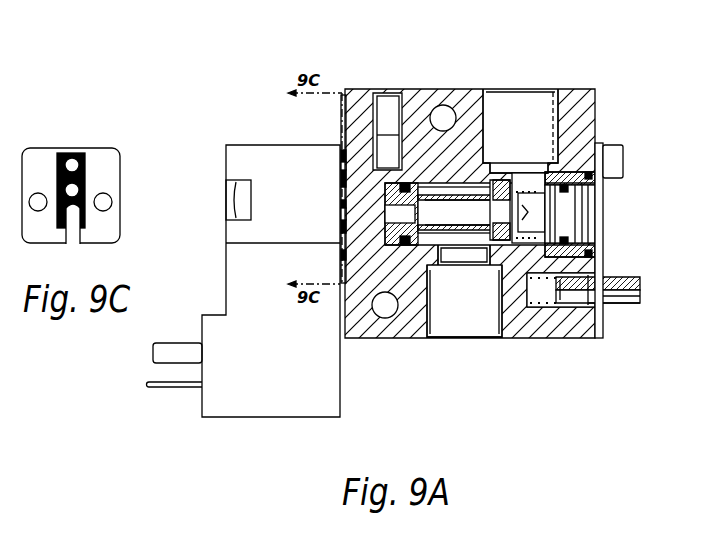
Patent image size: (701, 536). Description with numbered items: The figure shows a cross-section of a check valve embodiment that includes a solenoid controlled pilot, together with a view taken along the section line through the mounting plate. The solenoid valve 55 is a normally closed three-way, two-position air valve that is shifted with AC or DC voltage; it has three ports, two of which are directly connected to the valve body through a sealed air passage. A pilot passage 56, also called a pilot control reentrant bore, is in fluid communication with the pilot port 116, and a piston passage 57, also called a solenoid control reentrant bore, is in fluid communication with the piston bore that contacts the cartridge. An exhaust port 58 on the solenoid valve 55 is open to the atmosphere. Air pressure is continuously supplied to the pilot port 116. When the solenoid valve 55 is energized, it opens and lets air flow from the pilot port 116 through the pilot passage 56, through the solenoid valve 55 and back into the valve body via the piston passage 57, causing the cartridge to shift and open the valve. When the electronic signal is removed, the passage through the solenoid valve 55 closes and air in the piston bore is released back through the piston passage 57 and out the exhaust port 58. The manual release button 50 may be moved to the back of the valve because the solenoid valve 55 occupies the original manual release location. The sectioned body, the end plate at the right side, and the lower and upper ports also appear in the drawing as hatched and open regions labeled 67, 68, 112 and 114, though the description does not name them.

In FIG. 9A, the manual release button 50 is at (628, 305).
In FIG. 9A, the solenoid valve 55 is at (250, 417).
In FIG. 9C, the pilot passage 56 is at (72, 152).
In FIG. 9A, the pilot passage 56 is at (357, 163).
In FIG. 9C, the piston passage 57 is at (82, 187).
In FIG. 9A, the piston passage 57 is at (340, 163).
In FIG. 9C, the exhaust port 58 is at (70, 233).
In FIG. 9A, the exhaust port 58 is at (340, 216).
In FIG. 9A, the valve body 67 is at (383, 243).
In FIG. 9A, the end plate 68 is at (603, 215).
In FIG. 9A, the port 112 is at (468, 340).
In FIG. 9A, the port 114 is at (530, 89).
In FIG. 9A, the pilot port 116 is at (379, 92).